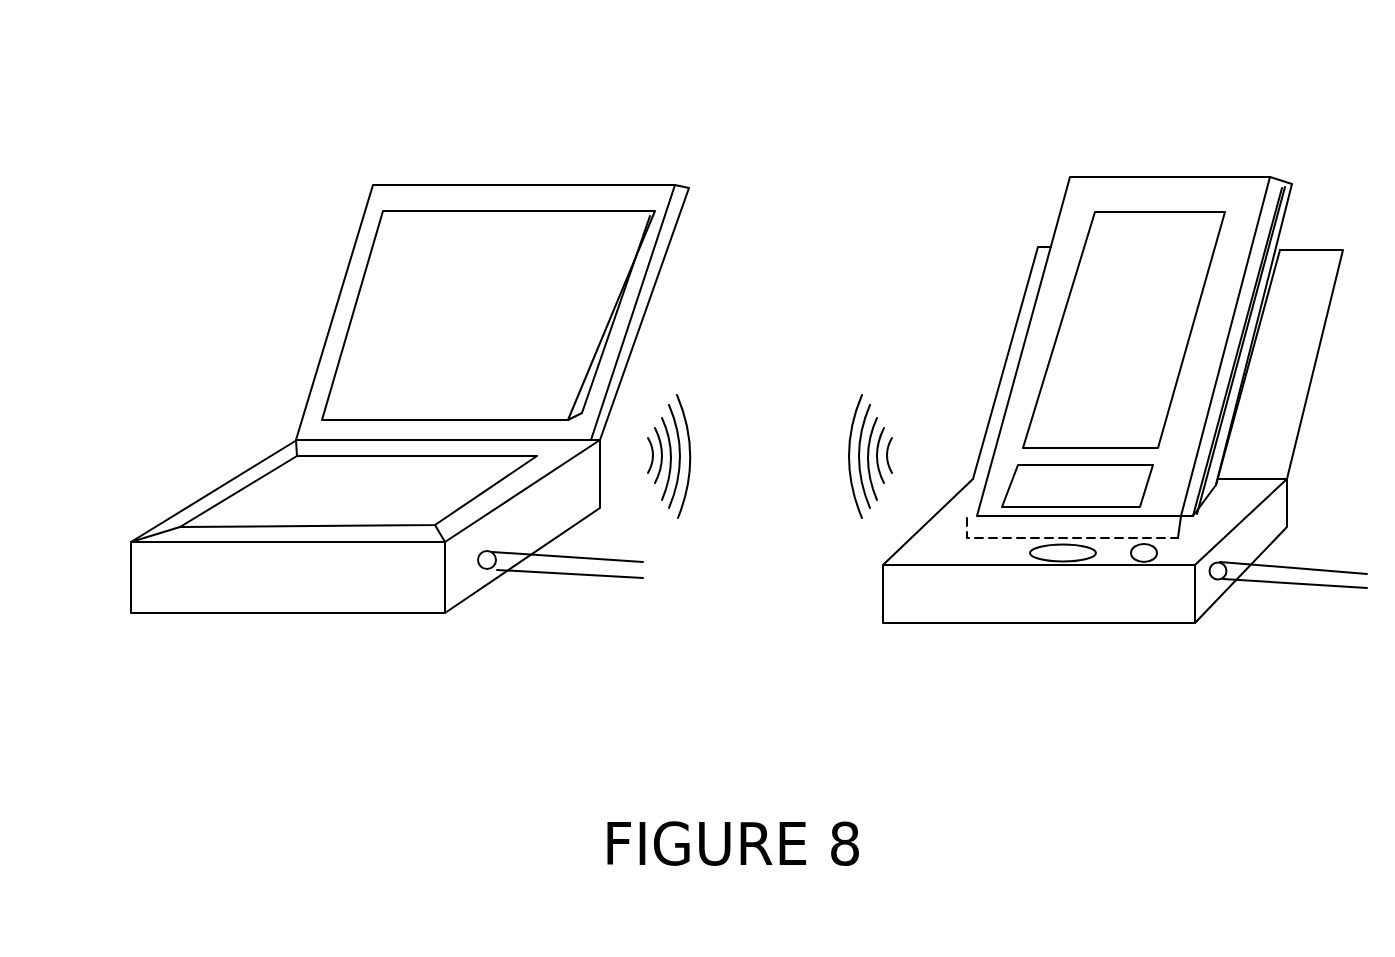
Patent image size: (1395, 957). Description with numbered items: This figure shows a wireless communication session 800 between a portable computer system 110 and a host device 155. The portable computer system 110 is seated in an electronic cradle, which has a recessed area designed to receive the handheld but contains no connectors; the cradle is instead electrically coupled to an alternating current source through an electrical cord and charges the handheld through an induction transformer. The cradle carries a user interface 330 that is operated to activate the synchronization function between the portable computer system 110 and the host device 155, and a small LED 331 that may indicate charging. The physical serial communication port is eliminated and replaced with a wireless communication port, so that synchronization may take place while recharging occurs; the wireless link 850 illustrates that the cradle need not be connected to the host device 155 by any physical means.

The communication system 800 is at (202, 55).
The host device 155 is at (547, 184).
The portable computer system 110 is at (1200, 177).
The wireless communication 850 is at (783, 403).
The user interface 330 is at (1033, 560).
The LED 331 is at (1133, 560).